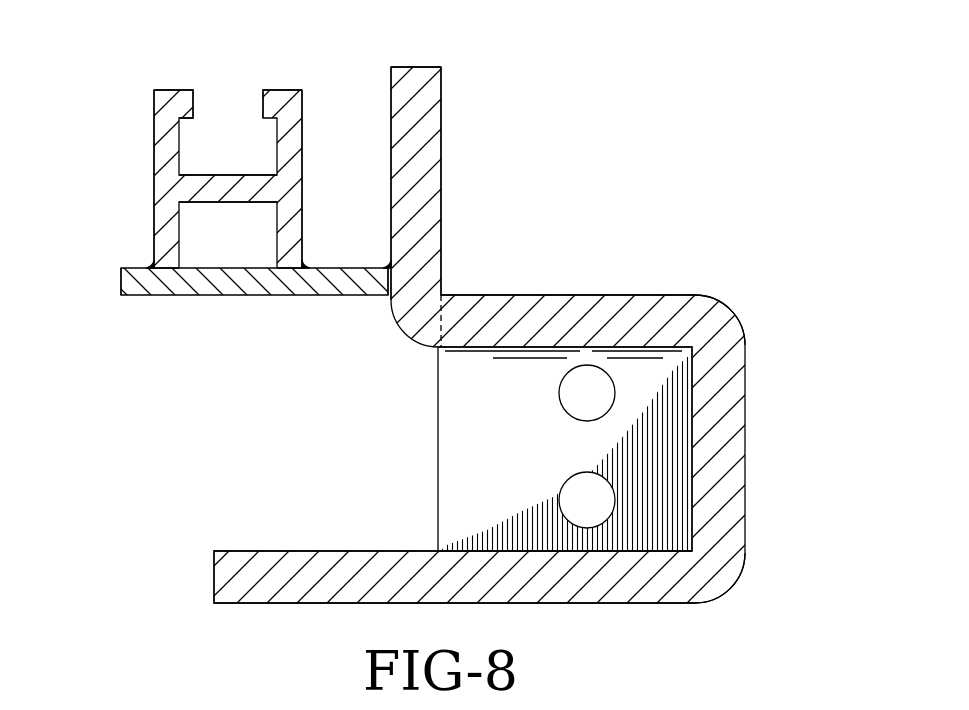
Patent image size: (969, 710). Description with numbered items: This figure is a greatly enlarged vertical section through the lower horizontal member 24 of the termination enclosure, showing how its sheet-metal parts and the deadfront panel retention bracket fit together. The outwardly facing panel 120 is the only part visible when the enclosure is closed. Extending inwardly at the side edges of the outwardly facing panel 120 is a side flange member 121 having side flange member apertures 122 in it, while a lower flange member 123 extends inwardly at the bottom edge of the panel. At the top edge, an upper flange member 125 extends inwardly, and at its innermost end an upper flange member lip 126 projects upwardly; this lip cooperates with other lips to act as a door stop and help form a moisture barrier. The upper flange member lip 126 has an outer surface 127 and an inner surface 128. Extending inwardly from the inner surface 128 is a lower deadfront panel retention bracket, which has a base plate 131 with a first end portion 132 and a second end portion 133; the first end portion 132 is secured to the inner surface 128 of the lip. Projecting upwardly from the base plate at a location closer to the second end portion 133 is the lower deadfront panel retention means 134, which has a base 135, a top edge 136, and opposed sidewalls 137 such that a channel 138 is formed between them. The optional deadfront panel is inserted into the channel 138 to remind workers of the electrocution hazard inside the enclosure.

The lower horizontal member 24 is at (665, 132).
The outwardly facing panel 120 is at (744, 452).
The side flange member 121 is at (481, 457).
The side flange member apertures 122 is at (570, 412).
The lower flange member 123 is at (542, 603).
The upper flange member 125 is at (604, 295).
The upper flange member lip 126 is at (427, 111).
The outer surface 127 is at (442, 181).
The inner surface 128 is at (390, 110).
The base plate 131 is at (268, 287).
The first end portion 132 is at (387, 296).
The second end portion 133 is at (121, 296).
The lower deadfront panel retention means 134 is at (150, 169).
The base 135 is at (154, 265).
The top edge 136 is at (172, 90).
The opposed sidewalls 137 is at (153, 123).
The channel 138 is at (210, 148).